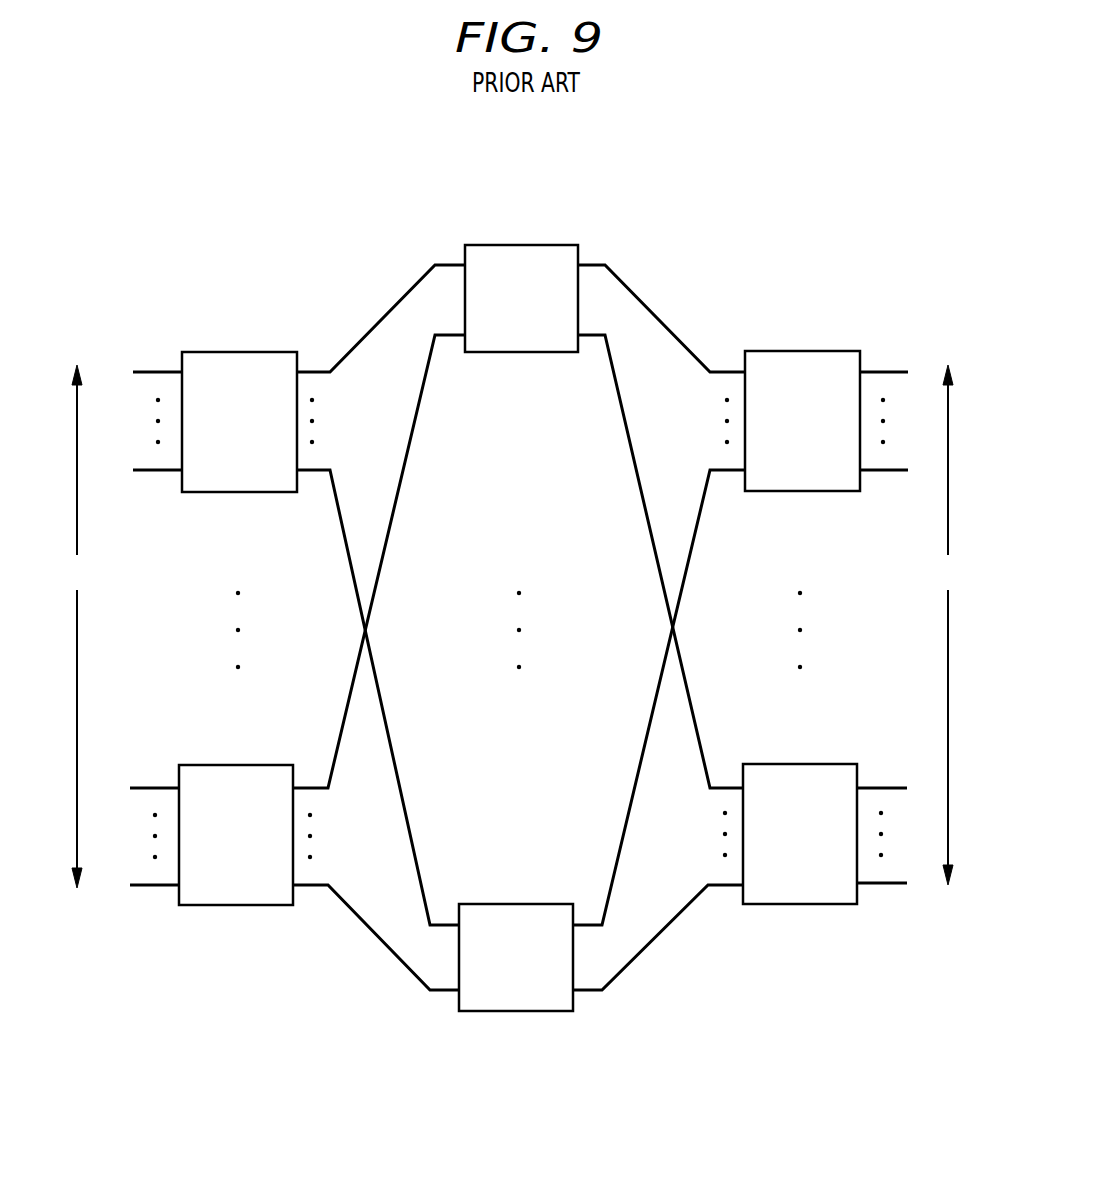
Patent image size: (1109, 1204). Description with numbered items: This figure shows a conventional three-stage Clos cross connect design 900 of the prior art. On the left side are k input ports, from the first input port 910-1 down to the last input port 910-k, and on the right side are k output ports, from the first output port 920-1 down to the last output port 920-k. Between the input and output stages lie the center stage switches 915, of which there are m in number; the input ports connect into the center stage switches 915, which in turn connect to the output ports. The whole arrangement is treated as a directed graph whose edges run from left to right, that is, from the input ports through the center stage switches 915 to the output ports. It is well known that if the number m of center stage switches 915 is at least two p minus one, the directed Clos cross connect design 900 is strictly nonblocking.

The Clos cross connect design 900 is at (800, 171).
The center stage switches 915 is at (546, 223).
The input port 910-1 is at (218, 352).
The input port 910-k is at (215, 765).
The output port 920-1 is at (780, 351).
The output port 920-k is at (778, 764).